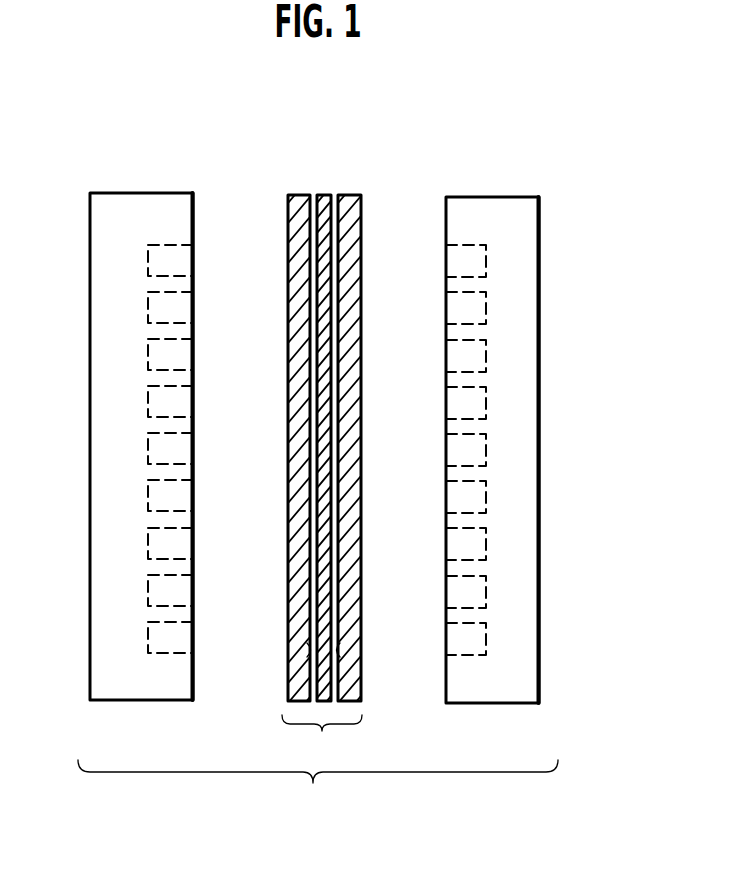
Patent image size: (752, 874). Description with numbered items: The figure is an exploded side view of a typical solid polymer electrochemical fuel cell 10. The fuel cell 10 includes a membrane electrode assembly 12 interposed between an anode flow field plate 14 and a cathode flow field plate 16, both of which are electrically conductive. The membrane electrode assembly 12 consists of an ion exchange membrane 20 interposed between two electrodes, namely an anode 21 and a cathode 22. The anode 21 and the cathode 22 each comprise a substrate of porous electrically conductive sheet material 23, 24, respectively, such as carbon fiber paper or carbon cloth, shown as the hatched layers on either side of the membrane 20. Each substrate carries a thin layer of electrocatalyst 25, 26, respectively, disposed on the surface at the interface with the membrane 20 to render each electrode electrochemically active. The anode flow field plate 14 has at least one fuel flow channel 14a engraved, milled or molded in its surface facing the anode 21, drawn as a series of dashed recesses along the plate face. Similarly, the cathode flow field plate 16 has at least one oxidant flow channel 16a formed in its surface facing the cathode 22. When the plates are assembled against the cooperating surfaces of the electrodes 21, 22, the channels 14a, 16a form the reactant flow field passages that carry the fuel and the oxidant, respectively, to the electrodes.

The fuel cell 10 is at (318, 788).
The membrane electrode assembly 12 is at (322, 738).
The anode flow field plate 14 is at (525, 368).
The fuel flow channel 14a is at (488, 453).
The cathode flow field plate 16 is at (97, 317).
The oxidant flow channel 16a is at (148, 450).
The ion exchange membrane 20 is at (327, 195).
The anode 21 is at (346, 195).
The cathode 22 is at (298, 195).
The porous electrically conductive sheet material 23 is at (350, 614).
The porous electrically conductive sheet material 24 is at (297, 603).
The electrocatalyst 25 is at (340, 650).
The electrocatalyst 26 is at (305, 655).